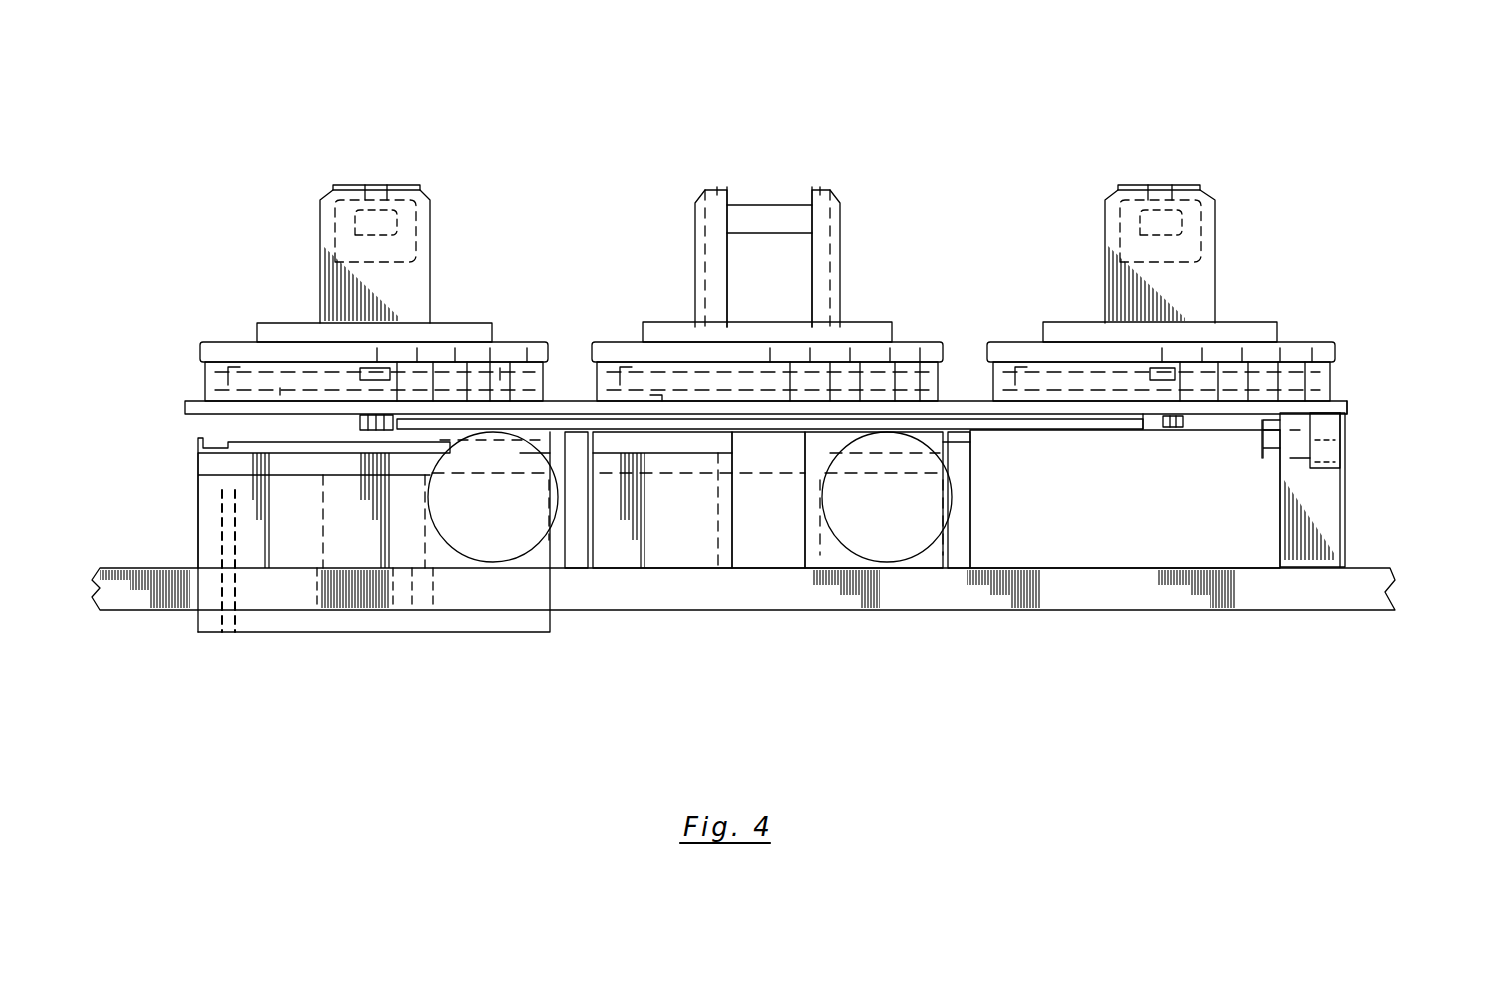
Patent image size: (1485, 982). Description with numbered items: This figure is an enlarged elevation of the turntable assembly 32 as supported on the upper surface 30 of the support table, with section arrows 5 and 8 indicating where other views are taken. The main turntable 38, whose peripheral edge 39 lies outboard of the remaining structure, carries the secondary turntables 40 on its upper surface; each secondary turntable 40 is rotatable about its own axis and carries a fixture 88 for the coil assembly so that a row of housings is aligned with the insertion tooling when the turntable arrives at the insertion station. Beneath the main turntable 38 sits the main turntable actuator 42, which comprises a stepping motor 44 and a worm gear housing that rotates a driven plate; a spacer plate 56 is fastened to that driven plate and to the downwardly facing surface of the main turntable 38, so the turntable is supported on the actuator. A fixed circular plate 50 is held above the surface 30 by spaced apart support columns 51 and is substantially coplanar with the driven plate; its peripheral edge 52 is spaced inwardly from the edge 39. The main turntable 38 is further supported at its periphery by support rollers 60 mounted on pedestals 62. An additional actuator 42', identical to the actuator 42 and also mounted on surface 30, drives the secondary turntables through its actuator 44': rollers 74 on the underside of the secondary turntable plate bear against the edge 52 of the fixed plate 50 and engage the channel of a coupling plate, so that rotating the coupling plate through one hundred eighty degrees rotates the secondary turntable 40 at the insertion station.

The section line 5- 5 is at (184, 414).
The section line 8- 8 is at (230, 83).
The upper surface of support table 30 is at (1257, 598).
The turntable assembly 32 is at (1012, 188).
The main turntable 38 is at (968, 401).
The peripheral edge of main turntable 39 is at (1350, 400).
The secondary turntable 40 is at (470, 328).
The main turntable actuator 42 is at (699, 570).
The additional actuator 42' is at (335, 532).
The stepping motor 44 is at (878, 560).
The actuator 44' is at (493, 564).
The fixed circular plate 50 is at (1095, 430).
The support column 51 is at (577, 553).
The peripheral edge of fixed circular plate 52 is at (1150, 427).
The spacer plate 56 is at (948, 442).
The support roller 60 is at (1343, 443).
The pedestal 62 is at (1327, 528).
The roller 74 is at (356, 432).
The fixture 88 is at (440, 266).